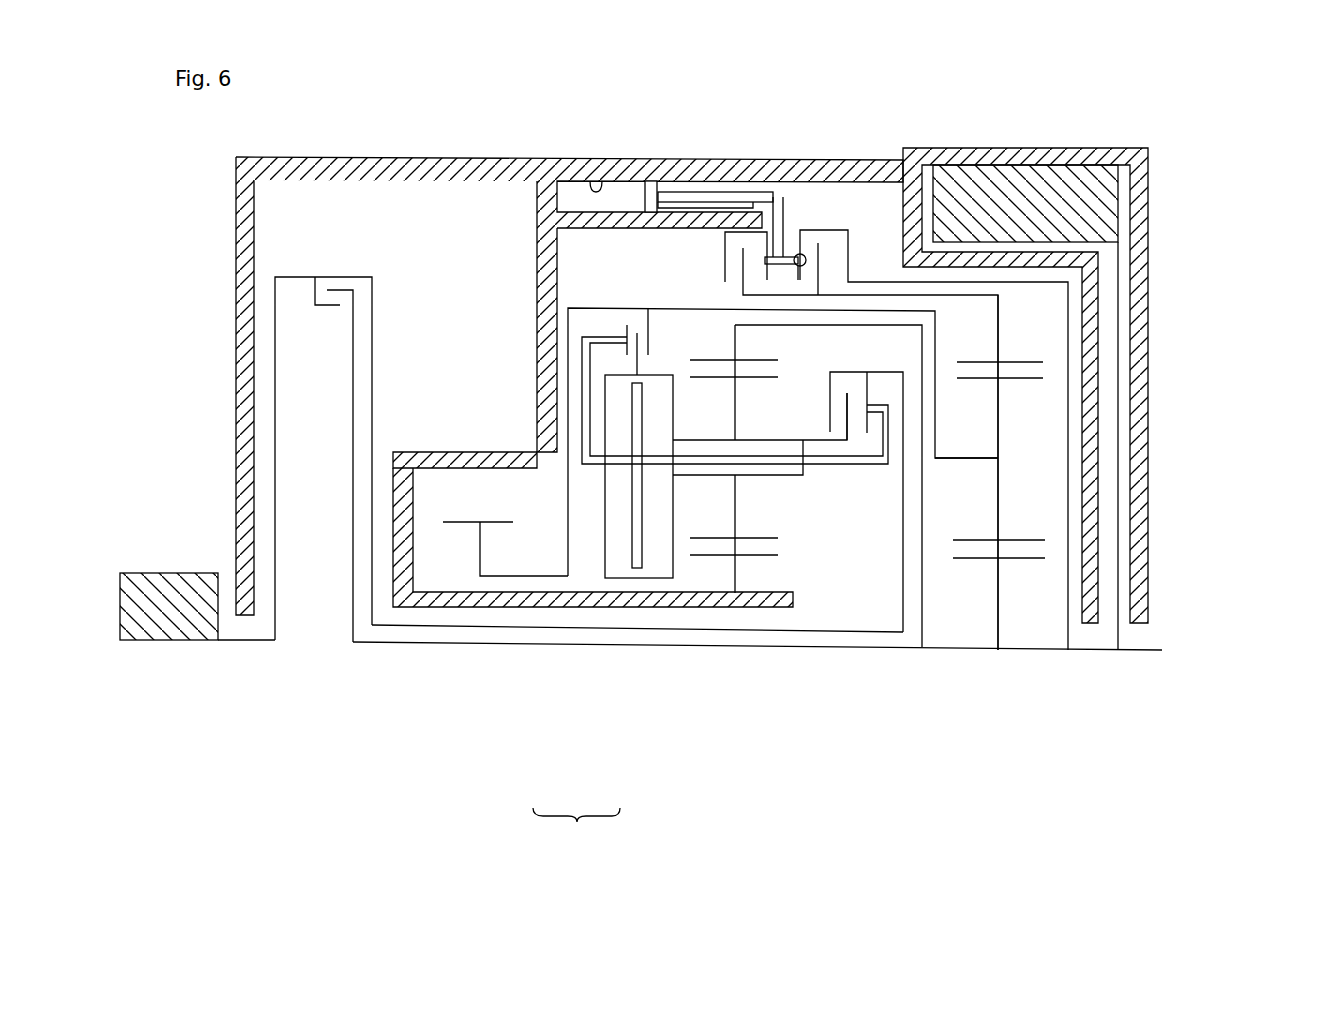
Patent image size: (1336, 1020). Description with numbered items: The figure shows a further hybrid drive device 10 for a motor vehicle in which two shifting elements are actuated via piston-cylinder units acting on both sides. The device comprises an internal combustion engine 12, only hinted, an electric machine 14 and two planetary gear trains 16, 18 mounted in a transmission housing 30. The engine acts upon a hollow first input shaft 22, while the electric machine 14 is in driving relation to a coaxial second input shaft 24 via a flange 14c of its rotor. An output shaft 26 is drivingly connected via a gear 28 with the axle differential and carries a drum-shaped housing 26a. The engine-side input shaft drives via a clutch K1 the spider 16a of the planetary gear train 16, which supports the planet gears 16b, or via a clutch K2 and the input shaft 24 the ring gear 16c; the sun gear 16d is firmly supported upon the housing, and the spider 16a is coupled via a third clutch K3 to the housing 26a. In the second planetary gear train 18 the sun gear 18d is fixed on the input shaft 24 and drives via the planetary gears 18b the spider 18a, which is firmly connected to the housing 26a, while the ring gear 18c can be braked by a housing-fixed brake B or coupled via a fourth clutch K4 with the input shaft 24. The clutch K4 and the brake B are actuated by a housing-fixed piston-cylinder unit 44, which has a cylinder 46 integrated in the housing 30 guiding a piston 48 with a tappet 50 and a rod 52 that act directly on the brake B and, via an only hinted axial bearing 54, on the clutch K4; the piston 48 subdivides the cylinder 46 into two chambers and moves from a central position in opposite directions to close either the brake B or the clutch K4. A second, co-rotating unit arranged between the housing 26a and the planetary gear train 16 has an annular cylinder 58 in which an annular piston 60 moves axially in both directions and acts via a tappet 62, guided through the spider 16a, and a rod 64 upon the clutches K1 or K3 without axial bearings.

The hybrid drive device 10 is at (480, 150).
The internal combustion engine 12 is at (168, 566).
The electric machine 14 is at (1054, 158).
The flange 14c is at (1123, 258).
The planetary gear train 16 is at (756, 555).
The spider 16a is at (791, 478).
The planet gears 16b is at (727, 382).
The ring gear 16c is at (700, 362).
The sun gear 16d is at (738, 571).
The planetary gear train 18 is at (1120, 472).
The spider 18a is at (975, 458).
The planetary gears 18b is at (1030, 538).
The ring gear 18c is at (1030, 362).
The sun gear 18d is at (999, 596).
The first input shaft 22 is at (505, 610).
The second input shaft 24 is at (430, 652).
The output shaft 26 is at (533, 578).
The drum-shaped housing 26a is at (536, 428).
The gear 28 is at (487, 520).
The transmission housing 30 is at (235, 270).
The piston-cylinder unit 44 is at (620, 133).
The cylinder 46 is at (594, 180).
The piston 48 is at (641, 155).
The tappet 50 is at (732, 192).
The rod 52 is at (753, 203).
The axial bearing 54 is at (796, 252).
The annular cylinder 58 is at (652, 580).
The annular piston 60 is at (630, 552).
The tappet 62 is at (893, 422).
The rod 64 is at (581, 371).
The brake B is at (740, 270).
The clutch K1 is at (858, 446).
The clutch K2 is at (335, 288).
The third clutch K3 is at (628, 323).
The fourth clutch K4 is at (834, 224).